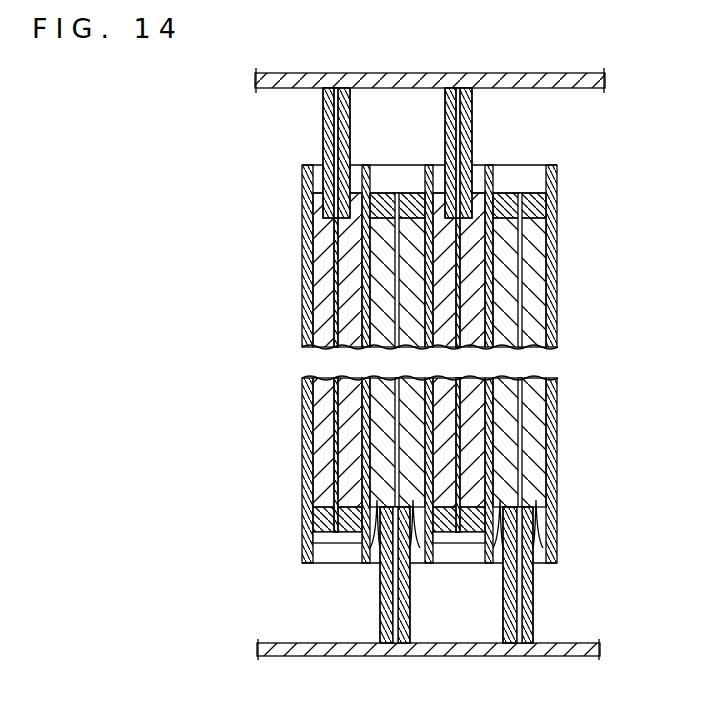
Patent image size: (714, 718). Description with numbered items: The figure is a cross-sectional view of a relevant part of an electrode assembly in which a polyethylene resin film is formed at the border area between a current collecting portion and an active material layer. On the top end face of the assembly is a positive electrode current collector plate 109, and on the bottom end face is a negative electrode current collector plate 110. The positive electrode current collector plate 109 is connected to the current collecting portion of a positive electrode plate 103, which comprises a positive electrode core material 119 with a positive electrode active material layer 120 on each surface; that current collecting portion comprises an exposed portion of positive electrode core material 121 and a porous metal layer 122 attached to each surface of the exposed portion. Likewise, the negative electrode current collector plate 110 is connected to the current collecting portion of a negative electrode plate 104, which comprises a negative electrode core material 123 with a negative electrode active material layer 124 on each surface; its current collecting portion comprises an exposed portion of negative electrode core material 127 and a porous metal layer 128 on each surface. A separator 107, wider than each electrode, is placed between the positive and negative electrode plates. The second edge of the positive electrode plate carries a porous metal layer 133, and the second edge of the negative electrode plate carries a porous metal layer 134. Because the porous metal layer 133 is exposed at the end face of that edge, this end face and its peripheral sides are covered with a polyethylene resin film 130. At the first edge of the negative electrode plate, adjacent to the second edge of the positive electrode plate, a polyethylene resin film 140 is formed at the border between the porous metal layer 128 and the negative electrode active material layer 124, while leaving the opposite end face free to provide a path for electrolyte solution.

The positive electrode current collector plate 109 is at (507, 73).
The negative electrode current collector plate 110 is at (350, 657).
The exposed portion of positive electrode core material 121 is at (391, 153).
The porous metal layer 122 is at (334, 134).
The porous metal layer 134 is at (414, 195).
The positive electrode plate 103 is at (254, 270).
The positive electrode active material layer 120 is at (306, 263).
The positive electrode core material 119 is at (330, 293).
The negative electrode plate 104 is at (527, 234).
The negative electrode active material layer 124 is at (538, 275).
The negative electrode core material 123 is at (523, 300).
The separator 107 is at (357, 444).
The porous metal layer 133 is at (345, 500).
The polyethylene resin film 130 is at (325, 540).
The polyethylene resin film 140 is at (366, 549).
The porous metal layer 128 is at (380, 590).
The exposed portion of negative electrode core material 127 is at (394, 620).